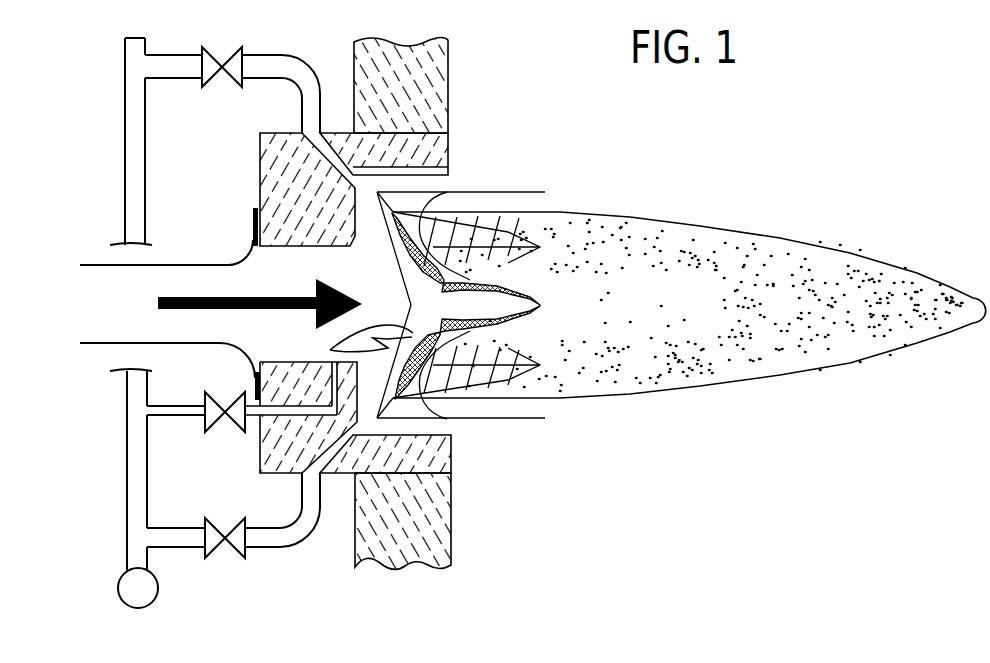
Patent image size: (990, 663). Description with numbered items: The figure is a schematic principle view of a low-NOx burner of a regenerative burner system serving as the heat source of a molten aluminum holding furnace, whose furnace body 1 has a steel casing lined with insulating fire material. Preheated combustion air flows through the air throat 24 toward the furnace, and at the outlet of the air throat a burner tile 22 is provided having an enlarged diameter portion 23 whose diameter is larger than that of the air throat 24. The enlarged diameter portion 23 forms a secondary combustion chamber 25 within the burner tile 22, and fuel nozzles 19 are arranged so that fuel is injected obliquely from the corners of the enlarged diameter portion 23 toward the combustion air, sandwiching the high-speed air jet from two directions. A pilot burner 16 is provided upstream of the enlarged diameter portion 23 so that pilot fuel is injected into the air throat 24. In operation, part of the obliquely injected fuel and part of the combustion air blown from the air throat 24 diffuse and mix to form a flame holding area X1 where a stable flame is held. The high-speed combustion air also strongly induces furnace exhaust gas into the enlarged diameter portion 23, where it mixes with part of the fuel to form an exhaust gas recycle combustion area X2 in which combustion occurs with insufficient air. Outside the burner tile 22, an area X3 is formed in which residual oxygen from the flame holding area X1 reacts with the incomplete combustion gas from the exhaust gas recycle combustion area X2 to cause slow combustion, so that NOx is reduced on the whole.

The furnace body 1 is at (445, 528).
The pilot burner 16 is at (274, 406).
The fuel nozzle 19 is at (356, 160).
The burner tile 22 is at (425, 153).
The enlarged diameter portion 23 is at (338, 205).
The air throat 24 is at (240, 325).
The secondary combustion chamber 25 is at (393, 271).
The flame holding area X1 is at (480, 285).
The exhaust gas recycle combustion area X2 is at (473, 367).
The slow combustion area X3 is at (663, 240).